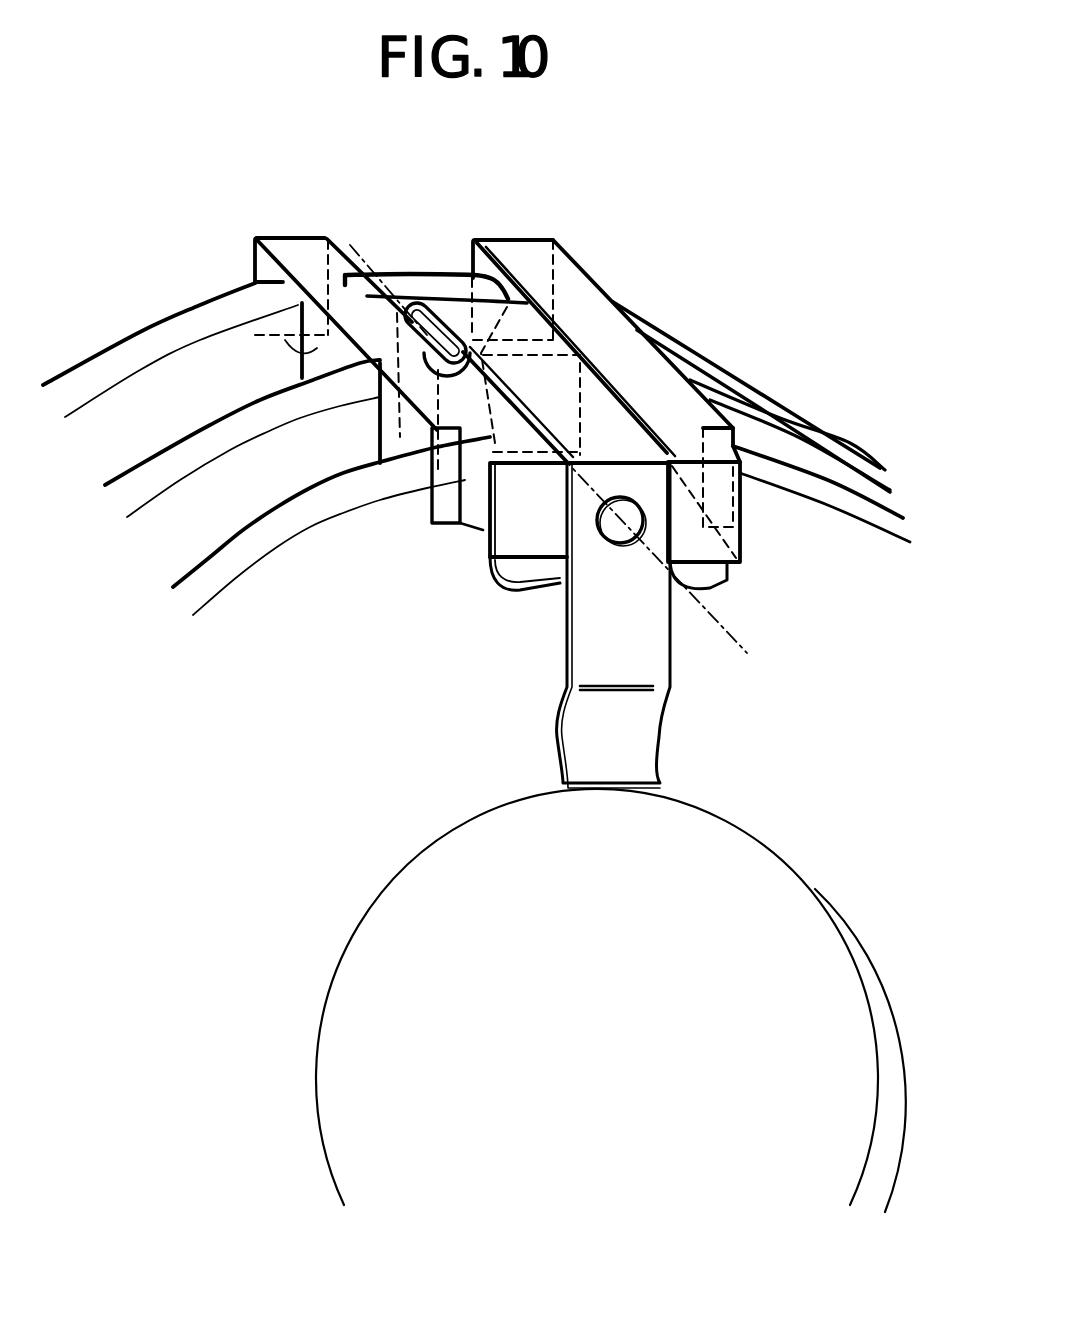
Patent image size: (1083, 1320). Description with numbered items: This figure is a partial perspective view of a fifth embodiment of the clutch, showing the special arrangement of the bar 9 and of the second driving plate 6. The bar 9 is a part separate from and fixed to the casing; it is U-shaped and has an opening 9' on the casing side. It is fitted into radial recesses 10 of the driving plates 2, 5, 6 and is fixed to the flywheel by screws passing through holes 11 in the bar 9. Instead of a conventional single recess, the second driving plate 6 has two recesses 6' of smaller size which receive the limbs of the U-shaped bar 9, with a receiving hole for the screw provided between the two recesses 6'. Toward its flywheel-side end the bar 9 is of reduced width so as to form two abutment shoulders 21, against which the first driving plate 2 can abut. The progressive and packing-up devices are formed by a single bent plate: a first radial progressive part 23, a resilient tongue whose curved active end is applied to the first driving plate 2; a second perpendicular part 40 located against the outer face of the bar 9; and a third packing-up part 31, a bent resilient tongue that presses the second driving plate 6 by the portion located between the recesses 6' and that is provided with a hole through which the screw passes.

The first driving plate 2 is at (250, 554).
The driving plate 5 is at (184, 448).
The second driving plate 6 is at (466, 382).
The recesses 6' is at (264, 334).
The bar 9 is at (414, 312).
The opening 9' is at (490, 317).
The radial recesses 10 is at (503, 586).
The holes 11 is at (613, 552).
The abutment shoulders 21 is at (737, 440).
The first radial progressive part 23 is at (630, 702).
The third packing-up part 31 is at (400, 378).
The second perpendicular part 40 is at (558, 390).